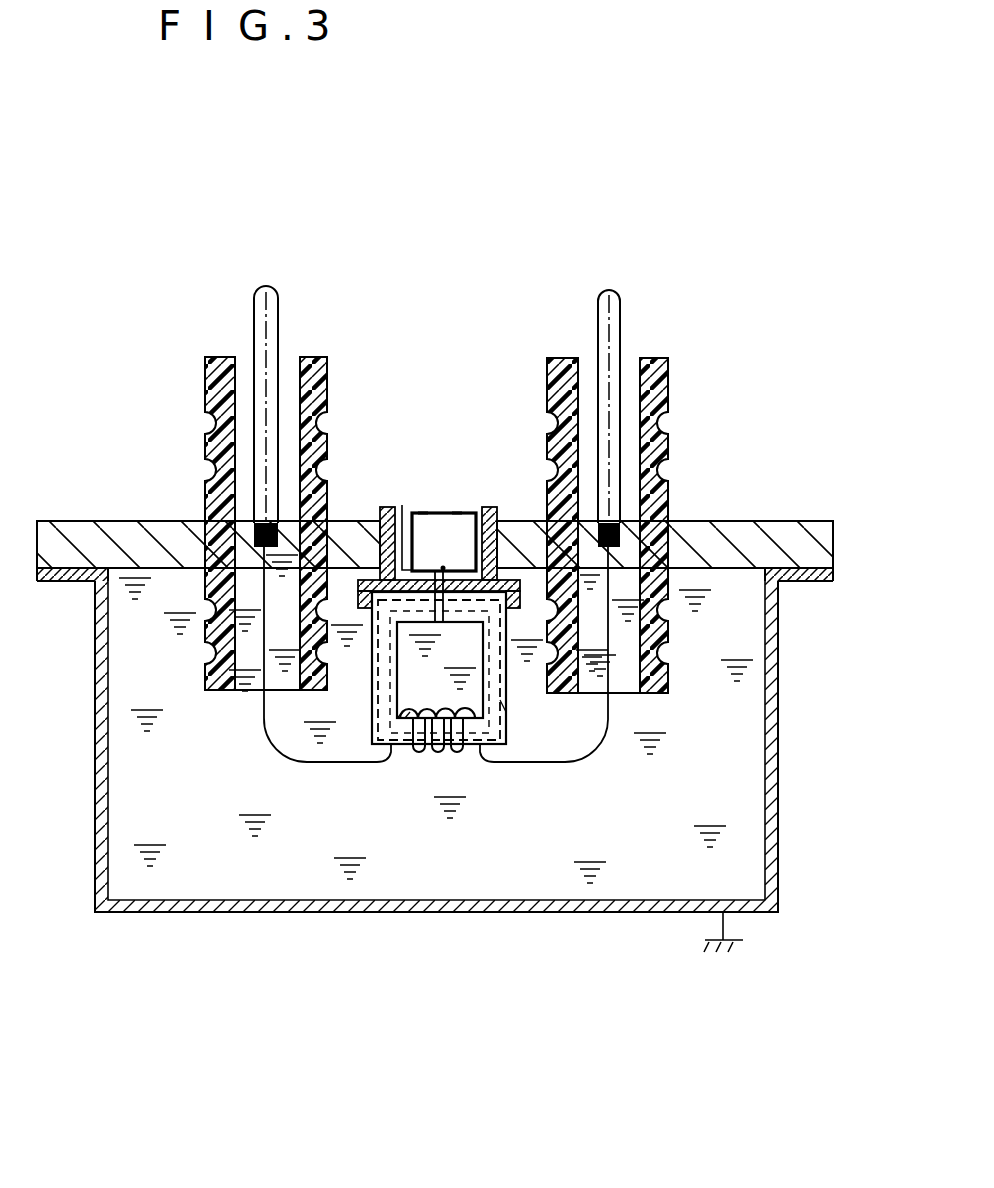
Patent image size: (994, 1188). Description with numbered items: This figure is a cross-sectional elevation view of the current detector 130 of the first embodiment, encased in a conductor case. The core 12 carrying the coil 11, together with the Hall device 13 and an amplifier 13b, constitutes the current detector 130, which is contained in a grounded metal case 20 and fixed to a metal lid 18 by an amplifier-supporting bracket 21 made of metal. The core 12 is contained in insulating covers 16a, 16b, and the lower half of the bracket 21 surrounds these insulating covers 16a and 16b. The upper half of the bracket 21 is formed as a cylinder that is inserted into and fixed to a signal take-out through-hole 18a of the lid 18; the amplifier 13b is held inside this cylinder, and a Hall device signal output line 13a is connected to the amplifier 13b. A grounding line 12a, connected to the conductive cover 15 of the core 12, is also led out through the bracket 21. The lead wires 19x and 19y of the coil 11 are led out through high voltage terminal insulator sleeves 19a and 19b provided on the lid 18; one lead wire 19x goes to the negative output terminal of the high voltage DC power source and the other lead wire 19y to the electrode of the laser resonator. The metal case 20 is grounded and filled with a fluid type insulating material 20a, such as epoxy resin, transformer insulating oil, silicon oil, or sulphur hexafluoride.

The coil 11 is at (458, 753).
The core 12 is at (505, 715).
The grounding line 12a is at (402, 508).
The Hall device 13 is at (397, 624).
The Hall device signal output line 13a is at (455, 513).
The amplifier 13b is at (423, 513).
The current detector 130 is at (522, 699).
The conductive cover 15 is at (437, 606).
The insulating cover 16a is at (397, 717).
The insulating cover 16b is at (405, 716).
The metal lid 18 is at (782, 540).
The signal take-out through-hole 18a is at (383, 508).
The high voltage terminal insulator sleeve 19a is at (212, 383).
The high voltage terminal insulator sleeve 19b is at (667, 390).
The lead wire 19x is at (254, 307).
The lead wire 19y is at (612, 308).
The metal case 20 is at (772, 716).
The fluid type insulating material 20a is at (742, 817).
The amplifier-supporting bracket 21 is at (490, 507).